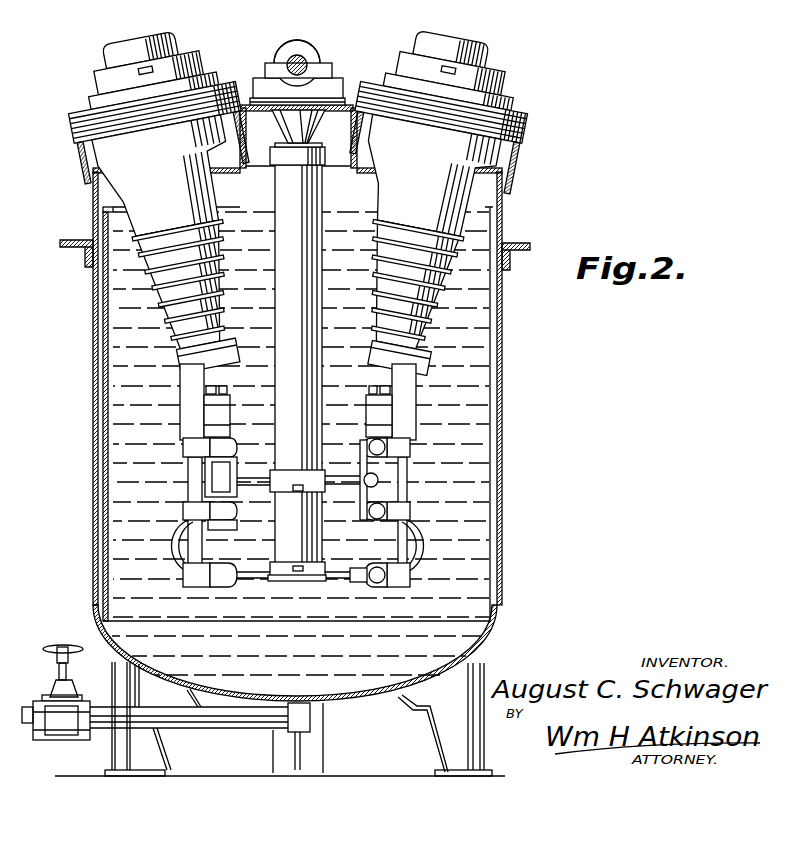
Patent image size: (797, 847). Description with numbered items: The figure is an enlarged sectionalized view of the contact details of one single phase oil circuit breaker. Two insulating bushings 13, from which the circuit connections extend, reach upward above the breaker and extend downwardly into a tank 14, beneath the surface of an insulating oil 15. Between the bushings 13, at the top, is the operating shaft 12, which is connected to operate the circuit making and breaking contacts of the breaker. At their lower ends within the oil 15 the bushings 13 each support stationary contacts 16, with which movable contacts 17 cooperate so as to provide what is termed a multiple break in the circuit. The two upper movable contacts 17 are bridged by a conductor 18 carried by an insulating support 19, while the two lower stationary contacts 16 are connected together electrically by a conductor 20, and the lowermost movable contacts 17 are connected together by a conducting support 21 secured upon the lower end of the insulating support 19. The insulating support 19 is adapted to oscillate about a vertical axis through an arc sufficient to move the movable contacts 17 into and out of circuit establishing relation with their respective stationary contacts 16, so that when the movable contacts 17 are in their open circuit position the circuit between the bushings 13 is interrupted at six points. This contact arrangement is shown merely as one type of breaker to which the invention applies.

The operating shaft 12 is at (304, 60).
The insulating bushings 13 is at (170, 42).
The tank 14 is at (503, 424).
The insulating oil 15 is at (118, 392).
The stationary contacts 16 is at (215, 454).
The movable contacts 17 is at (375, 520).
The conductor 18 is at (235, 492).
The insulating support 19 is at (309, 372).
The conductor 20 is at (173, 536).
The conducting support 21 is at (259, 578).